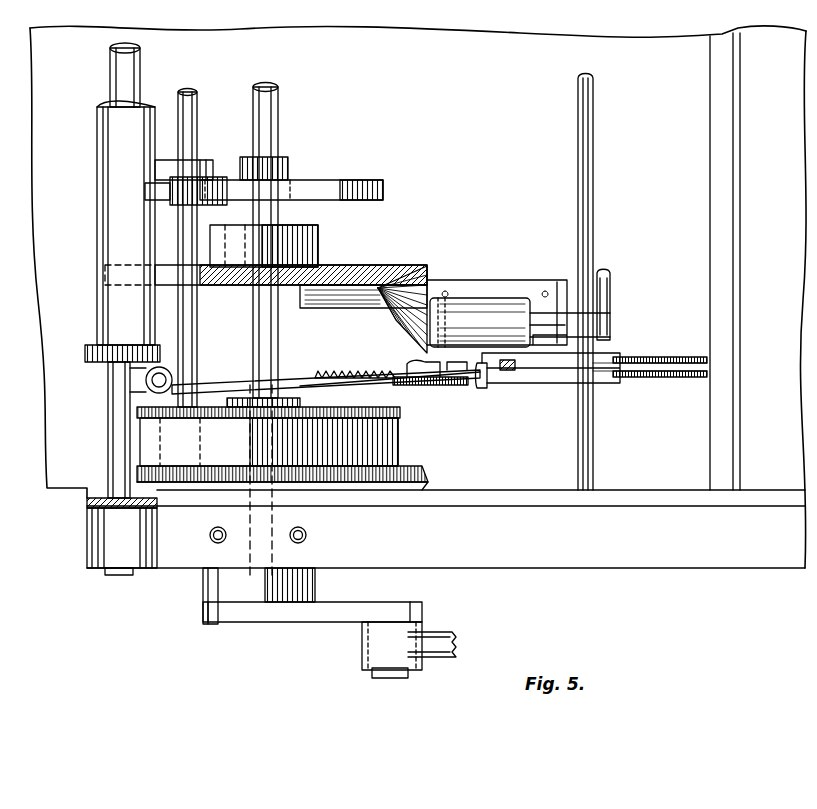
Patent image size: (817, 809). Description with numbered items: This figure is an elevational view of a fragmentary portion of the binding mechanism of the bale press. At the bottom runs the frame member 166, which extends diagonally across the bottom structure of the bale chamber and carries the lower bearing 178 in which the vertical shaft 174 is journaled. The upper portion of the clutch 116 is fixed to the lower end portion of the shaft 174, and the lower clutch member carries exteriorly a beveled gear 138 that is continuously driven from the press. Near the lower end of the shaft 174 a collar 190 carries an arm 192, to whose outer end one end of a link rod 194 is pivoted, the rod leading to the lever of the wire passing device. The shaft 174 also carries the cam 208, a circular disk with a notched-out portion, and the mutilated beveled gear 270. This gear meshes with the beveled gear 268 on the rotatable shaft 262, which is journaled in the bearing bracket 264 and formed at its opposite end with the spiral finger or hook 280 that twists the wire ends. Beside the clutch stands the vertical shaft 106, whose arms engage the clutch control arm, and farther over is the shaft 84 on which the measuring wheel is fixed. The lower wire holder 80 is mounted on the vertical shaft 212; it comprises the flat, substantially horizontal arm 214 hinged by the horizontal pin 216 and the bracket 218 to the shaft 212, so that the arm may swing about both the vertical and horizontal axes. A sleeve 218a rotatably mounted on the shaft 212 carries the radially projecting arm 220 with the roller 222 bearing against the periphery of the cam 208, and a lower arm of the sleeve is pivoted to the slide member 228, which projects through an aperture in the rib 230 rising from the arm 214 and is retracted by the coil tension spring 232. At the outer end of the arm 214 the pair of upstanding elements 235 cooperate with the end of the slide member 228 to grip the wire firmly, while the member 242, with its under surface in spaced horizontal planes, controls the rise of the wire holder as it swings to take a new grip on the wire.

The lower wire holder 80 is at (224, 385).
The shaft 84 is at (578, 105).
The vertical shaft 106 is at (198, 98).
The clutch 116 is at (396, 441).
The beveled gear 138 is at (421, 479).
The frame member 166 is at (628, 556).
The shaft 174 is at (258, 303).
The lower bearing 178 is at (210, 544).
The collar 190 is at (250, 608).
The arm 192 is at (356, 607).
The link rod 194 is at (437, 654).
The cam 208 is at (352, 184).
The vertical shaft 212 is at (118, 67).
The arm 214 is at (381, 380).
The pin 216 is at (148, 386).
The bracket 218 is at (140, 379).
The sleeve 218a is at (105, 204).
The radially projecting arm 220 is at (170, 160).
The roller 222 is at (148, 186).
The slide member 228 is at (407, 366).
The rib 230 is at (447, 365).
The coil tension spring 232 is at (345, 369).
The upstanding elements 235 is at (481, 385).
The member 242 is at (446, 384).
The rotatable shaft 262 is at (570, 322).
The bearing bracket 264 is at (482, 305).
The beveled gear 268 is at (397, 326).
The mutilated beveled gear 270 is at (392, 252).
The spiral finger or hook 280 is at (604, 275).